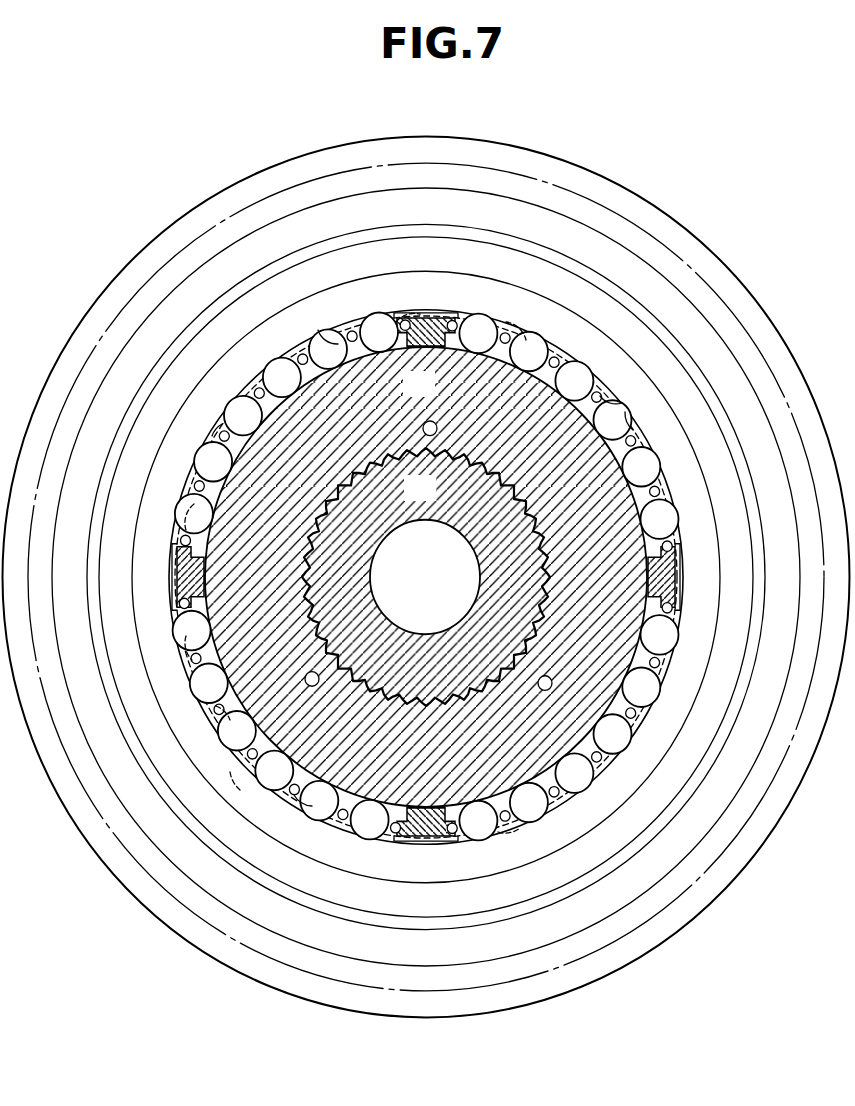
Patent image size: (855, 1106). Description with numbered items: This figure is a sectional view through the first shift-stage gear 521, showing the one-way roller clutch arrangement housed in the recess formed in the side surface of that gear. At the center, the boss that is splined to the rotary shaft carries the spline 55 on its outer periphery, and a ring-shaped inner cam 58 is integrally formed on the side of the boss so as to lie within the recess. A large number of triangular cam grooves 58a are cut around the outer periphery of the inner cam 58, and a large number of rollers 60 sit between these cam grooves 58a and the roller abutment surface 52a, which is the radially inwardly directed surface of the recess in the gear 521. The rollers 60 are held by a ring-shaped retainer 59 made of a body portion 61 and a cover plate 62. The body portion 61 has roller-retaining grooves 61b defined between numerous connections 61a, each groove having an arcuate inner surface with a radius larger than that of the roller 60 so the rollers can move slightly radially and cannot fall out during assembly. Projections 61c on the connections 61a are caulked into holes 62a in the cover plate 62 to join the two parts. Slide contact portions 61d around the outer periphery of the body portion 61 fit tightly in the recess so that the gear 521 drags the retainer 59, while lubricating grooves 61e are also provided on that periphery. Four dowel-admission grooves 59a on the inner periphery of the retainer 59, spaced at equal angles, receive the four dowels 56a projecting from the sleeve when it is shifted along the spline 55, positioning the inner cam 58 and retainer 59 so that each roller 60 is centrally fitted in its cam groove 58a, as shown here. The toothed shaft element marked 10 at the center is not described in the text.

The first shift-stage gear 521 is at (700, 242).
The roller abutment surface 52a is at (680, 592).
The retainer 59 is at (518, 316).
The dowel-admission grooves 59a is at (437, 316).
The body portion 61 is at (345, 313).
The connections 61a is at (320, 332).
The roller-retaining grooves 61b is at (258, 369).
The projection 61c is at (213, 438).
The slide contact portions 61d is at (398, 320).
The lubricating grooves 61e is at (508, 322).
The inner cam 58 is at (431, 397).
The cam grooves 58a is at (520, 372).
The shaft gear 10 is at (432, 500).
The spline 55 is at (193, 593).
The dowels 56a is at (185, 552).
The rollers 60 is at (270, 357).
The cover plate 62 is at (232, 776).
The holes 62a is at (218, 710).